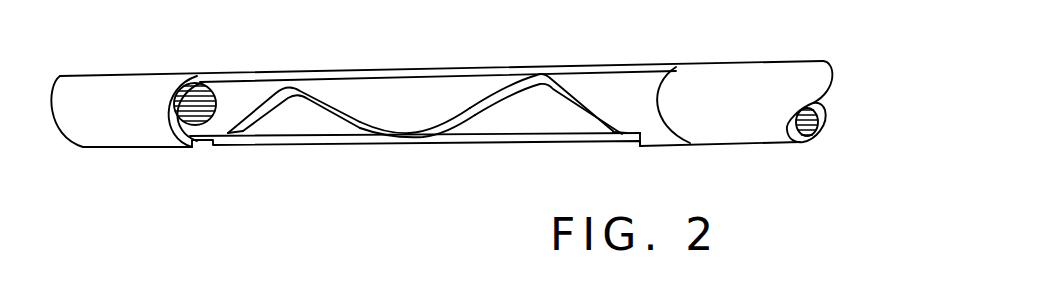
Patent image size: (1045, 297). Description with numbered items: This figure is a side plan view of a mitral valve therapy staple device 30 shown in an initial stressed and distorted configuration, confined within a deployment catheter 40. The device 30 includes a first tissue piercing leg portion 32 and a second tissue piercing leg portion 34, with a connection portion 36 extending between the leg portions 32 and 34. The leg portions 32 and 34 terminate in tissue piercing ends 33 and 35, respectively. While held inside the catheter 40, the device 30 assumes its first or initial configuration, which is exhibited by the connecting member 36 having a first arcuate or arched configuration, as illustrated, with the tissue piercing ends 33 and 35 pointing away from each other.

The mitral valve therapy staple device 30 is at (411, 121).
The first tissue piercing leg portion 32 is at (271, 90).
The tissue piercing end 33 is at (230, 134).
The second tissue piercing leg portion 34 is at (600, 97).
The tissue piercing end 35 is at (618, 132).
The connection portion 36 is at (401, 124).
The deployment catheter 40 is at (666, 62).